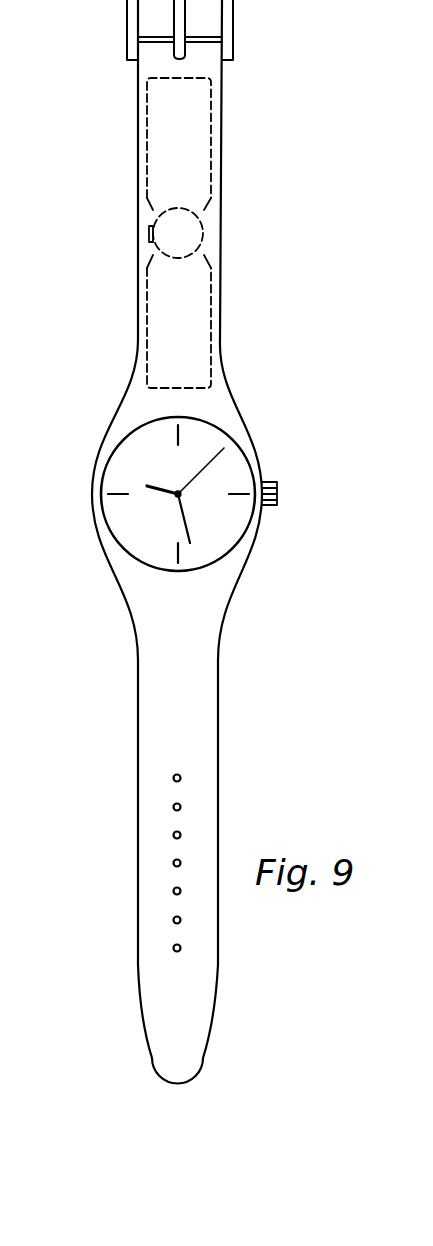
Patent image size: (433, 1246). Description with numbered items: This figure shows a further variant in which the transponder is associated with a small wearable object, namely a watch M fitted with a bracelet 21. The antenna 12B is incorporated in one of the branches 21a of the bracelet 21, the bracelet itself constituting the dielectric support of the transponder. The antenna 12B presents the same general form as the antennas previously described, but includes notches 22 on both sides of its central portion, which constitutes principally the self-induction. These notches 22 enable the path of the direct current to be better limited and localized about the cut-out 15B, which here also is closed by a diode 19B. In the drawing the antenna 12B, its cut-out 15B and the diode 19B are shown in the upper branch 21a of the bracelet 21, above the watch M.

The bracelet 21 is at (234, 163).
The branch of the bracelet 21a is at (163, 147).
The antenna 12B is at (212, 100).
The notches 22 is at (150, 208).
The cut-out 15B is at (203, 243).
The diode 19B is at (150, 234).
The watch M is at (255, 451).